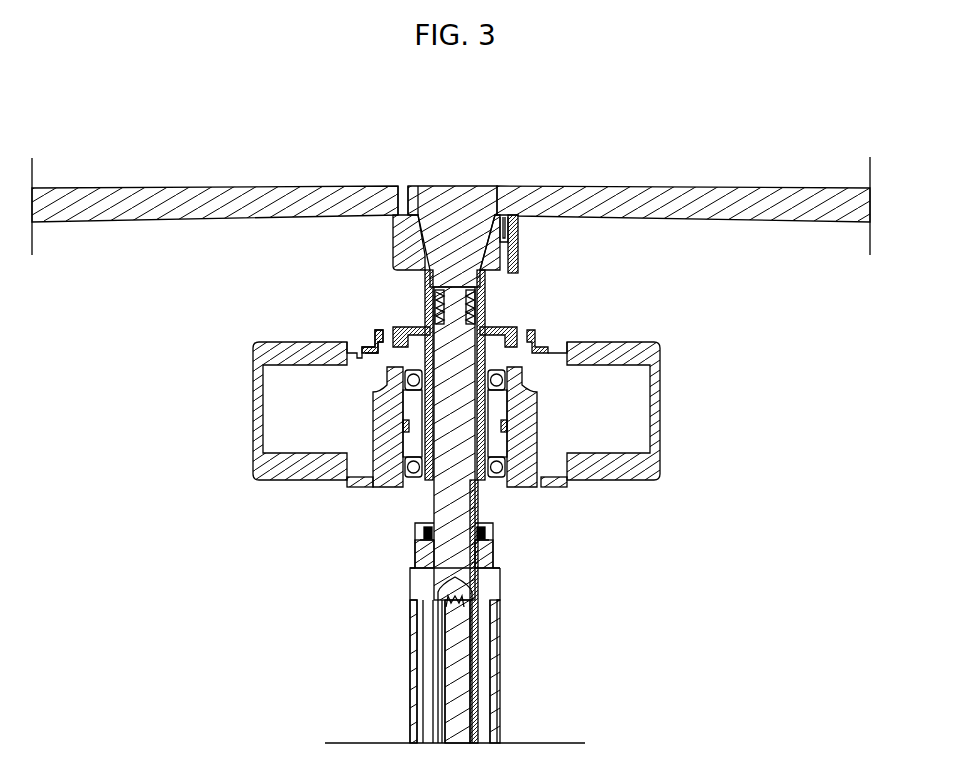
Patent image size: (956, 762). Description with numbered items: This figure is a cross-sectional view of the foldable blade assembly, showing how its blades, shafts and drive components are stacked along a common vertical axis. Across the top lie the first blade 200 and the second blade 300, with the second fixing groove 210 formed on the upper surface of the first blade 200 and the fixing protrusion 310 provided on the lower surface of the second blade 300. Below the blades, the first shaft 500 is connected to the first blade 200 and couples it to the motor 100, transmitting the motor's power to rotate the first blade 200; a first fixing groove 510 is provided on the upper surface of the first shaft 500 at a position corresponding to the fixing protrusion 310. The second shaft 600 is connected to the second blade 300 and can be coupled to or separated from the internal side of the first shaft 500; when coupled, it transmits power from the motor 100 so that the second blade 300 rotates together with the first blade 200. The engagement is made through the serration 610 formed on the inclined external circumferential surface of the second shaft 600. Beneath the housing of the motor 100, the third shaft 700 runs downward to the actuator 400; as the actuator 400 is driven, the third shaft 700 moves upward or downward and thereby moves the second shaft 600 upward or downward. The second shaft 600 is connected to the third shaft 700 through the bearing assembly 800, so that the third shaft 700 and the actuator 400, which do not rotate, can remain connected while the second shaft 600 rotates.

The motor 100 is at (663, 412).
The first blade 200 is at (190, 210).
The second fixing groove 210 is at (403, 200).
The second blade 300 is at (733, 200).
The fixing protrusion 310 is at (517, 233).
The actuator 400 is at (495, 650).
The first shaft 500 is at (395, 252).
The first fixing groove 510 is at (505, 260).
The second shaft 600 is at (430, 282).
The male serration 610 is at (462, 238).
The third shaft 700 is at (467, 555).
The bearing assembly 800 is at (490, 298).